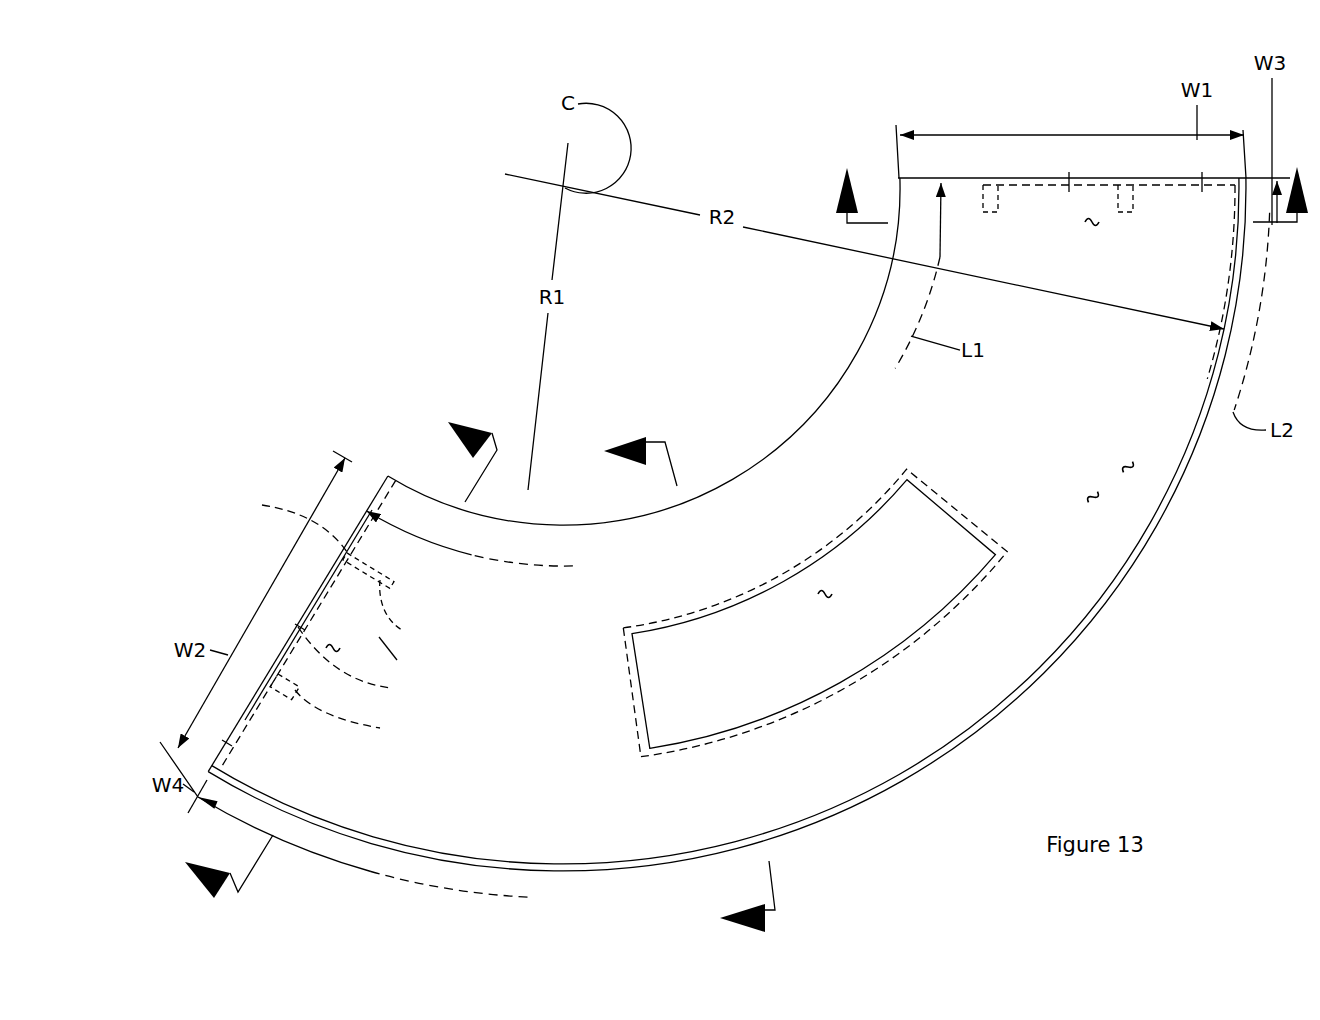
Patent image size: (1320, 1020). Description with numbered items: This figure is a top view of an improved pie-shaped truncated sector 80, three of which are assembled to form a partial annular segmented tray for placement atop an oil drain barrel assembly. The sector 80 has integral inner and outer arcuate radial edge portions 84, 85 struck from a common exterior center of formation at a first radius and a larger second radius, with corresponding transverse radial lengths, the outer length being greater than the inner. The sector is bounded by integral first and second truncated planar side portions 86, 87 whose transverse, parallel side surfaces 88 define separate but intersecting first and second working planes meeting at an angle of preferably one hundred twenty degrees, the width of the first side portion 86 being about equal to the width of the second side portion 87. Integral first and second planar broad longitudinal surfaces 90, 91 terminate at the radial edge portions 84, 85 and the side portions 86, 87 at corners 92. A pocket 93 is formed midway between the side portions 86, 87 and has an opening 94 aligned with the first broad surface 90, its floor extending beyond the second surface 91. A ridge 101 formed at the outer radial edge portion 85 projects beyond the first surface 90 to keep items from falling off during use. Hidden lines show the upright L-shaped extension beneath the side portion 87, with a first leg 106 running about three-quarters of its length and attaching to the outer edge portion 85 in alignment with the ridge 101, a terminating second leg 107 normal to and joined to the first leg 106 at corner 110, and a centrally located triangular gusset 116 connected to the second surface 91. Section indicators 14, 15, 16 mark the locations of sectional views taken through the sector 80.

The truncated sector 80 is at (990, 133).
The inner arcuate radial edge portion 84 is at (804, 409).
The outer arcuate radial edge portion 85 is at (1030, 687).
The first planar side portion 86 is at (1166, 176).
The second planar side portion 87 is at (318, 578).
The side surfaces 88 is at (1090, 207).
The first planar broad longitudinal surface 90 is at (1140, 479).
The second planar broad longitudinal surface 91 is at (1110, 509).
The corners 92 is at (898, 176).
The pocket 93 is at (822, 582).
The opening 94 is at (950, 528).
The ridge 101 is at (1105, 607).
The first leg 106 is at (364, 663).
The second leg 107 is at (412, 620).
The corner 110 is at (283, 521).
The triangular gusset 116 is at (357, 715).
The section line 14- 14 is at (1069, 182).
The section line 15- 15 is at (674, 684).
The section line 16- 16 is at (326, 650).